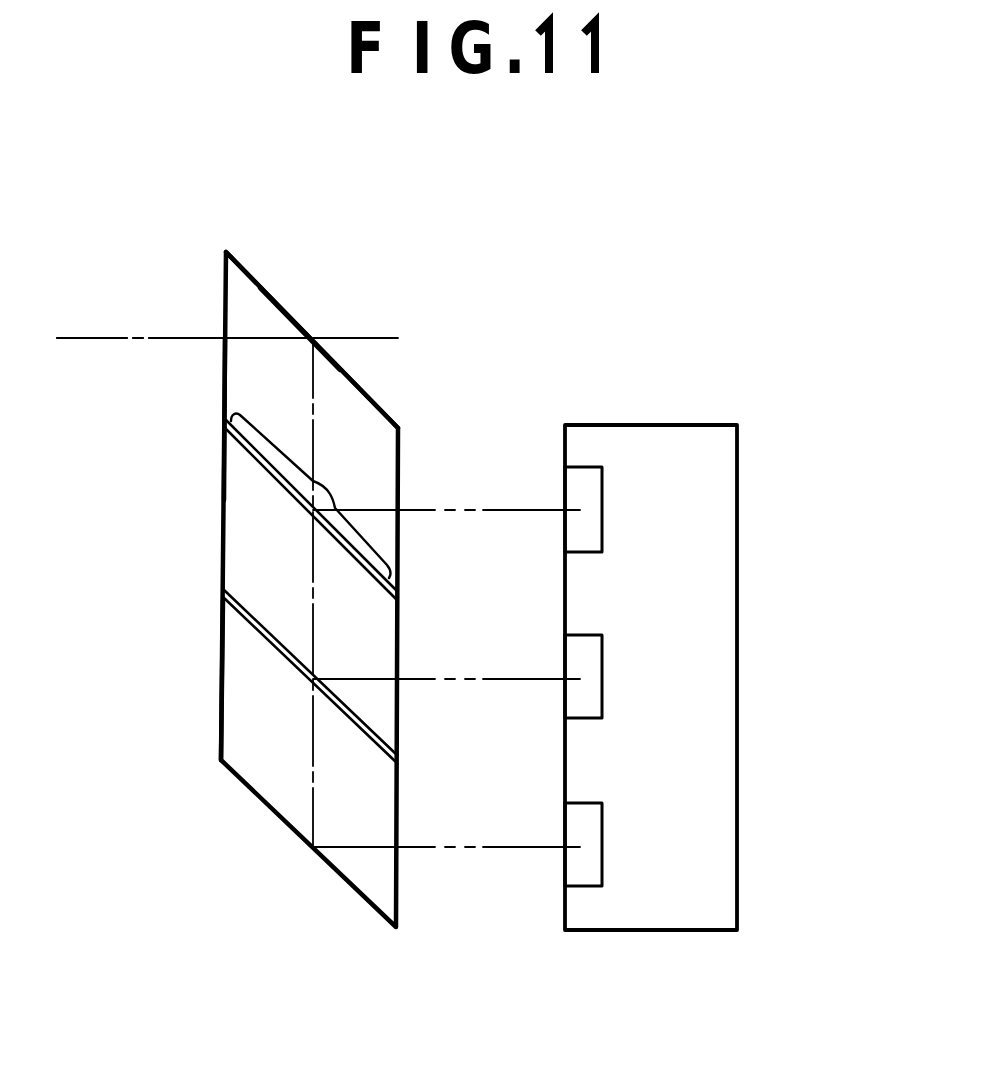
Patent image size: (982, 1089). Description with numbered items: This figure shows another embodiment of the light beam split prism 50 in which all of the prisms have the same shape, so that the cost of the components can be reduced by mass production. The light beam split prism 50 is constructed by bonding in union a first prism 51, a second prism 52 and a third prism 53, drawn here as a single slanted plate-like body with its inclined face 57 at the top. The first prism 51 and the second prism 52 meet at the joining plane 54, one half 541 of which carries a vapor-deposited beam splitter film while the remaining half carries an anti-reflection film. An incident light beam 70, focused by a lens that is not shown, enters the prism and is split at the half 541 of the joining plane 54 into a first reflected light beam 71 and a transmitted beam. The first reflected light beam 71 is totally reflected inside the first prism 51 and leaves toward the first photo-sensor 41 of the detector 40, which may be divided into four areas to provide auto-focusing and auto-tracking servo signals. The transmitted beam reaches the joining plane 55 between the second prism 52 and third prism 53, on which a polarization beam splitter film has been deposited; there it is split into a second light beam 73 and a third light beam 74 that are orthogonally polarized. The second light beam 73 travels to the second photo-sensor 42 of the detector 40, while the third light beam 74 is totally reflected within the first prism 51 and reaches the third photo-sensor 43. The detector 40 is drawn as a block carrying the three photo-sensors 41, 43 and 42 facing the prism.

The detector 40 is at (714, 438).
The first photo-sensor 41 is at (588, 495).
The second photo-sensor 42 is at (587, 830).
The third photo-sensor 43 is at (587, 663).
The light beam split prism 50 is at (209, 712).
The first prism 51 is at (237, 288).
The second prism 52 is at (237, 489).
The third prism 53 is at (237, 644).
The joining plane 54 is at (226, 422).
The half of the bonding plane with beam splitter film 541 is at (334, 479).
The joining plane 55 is at (226, 591).
The inclined end face 57 is at (272, 297).
The incident light beam 70 is at (72, 341).
The first reflected light beam 71 is at (513, 508).
The second light beam 73 is at (513, 848).
The third light beam 74 is at (513, 679).